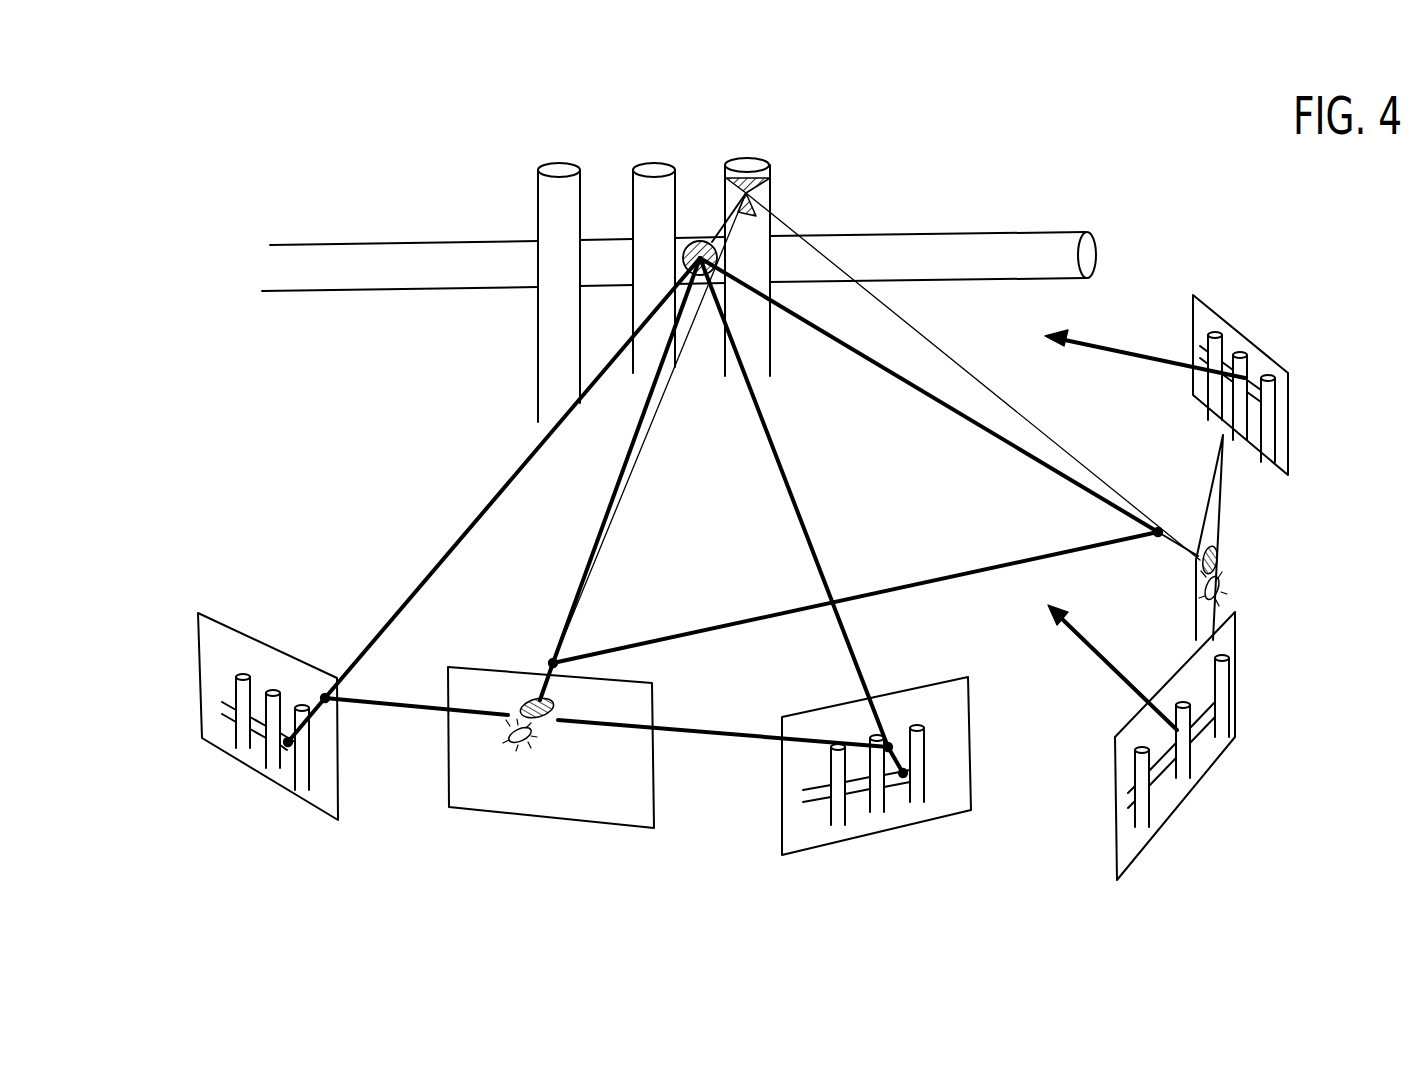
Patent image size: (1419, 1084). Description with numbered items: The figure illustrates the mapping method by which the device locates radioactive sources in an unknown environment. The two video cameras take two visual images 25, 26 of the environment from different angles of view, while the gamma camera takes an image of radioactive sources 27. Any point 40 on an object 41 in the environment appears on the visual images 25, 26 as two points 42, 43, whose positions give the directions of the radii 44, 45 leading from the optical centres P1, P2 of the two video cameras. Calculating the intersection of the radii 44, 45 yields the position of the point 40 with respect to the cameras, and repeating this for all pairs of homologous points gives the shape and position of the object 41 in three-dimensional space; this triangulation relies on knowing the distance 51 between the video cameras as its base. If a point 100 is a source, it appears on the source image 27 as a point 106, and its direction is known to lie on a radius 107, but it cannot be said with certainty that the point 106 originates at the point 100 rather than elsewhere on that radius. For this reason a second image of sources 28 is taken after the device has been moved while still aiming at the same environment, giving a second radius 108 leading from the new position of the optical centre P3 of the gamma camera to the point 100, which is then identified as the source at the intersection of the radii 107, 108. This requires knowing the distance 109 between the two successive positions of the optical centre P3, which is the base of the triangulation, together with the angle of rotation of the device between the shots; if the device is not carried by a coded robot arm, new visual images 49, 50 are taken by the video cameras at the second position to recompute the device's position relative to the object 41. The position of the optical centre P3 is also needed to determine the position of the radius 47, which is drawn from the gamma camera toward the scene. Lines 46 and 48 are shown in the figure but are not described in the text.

The visual image 25 is at (205, 632).
The visual image 26 is at (800, 838).
The image of radioactive sources 27 is at (500, 807).
The second image of sources 28 is at (1224, 545).
The point 40 is at (705, 242).
The object 41 is at (382, 243).
The point 42 is at (288, 748).
The point 43 is at (905, 778).
The radius 44 is at (485, 512).
The radius 45 is at (802, 520).
The detection spot on panel 27 46 is at (527, 701).
The radius 47 is at (614, 500).
The gamma ray path to P3 on panel 28 48 is at (923, 342).
The visual image 49 is at (1205, 768).
The visual image 50 is at (1238, 336).
The distance 51 is at (718, 732).
The point 100 is at (752, 198).
The point 106 is at (508, 734).
The radius 107 is at (692, 420).
The radius 108 is at (1002, 398).
The distance 109 is at (685, 634).
The optical centre P1 is at (325, 694).
The optical centre P2 is at (890, 744).
The optical centre P3 is at (553, 659).